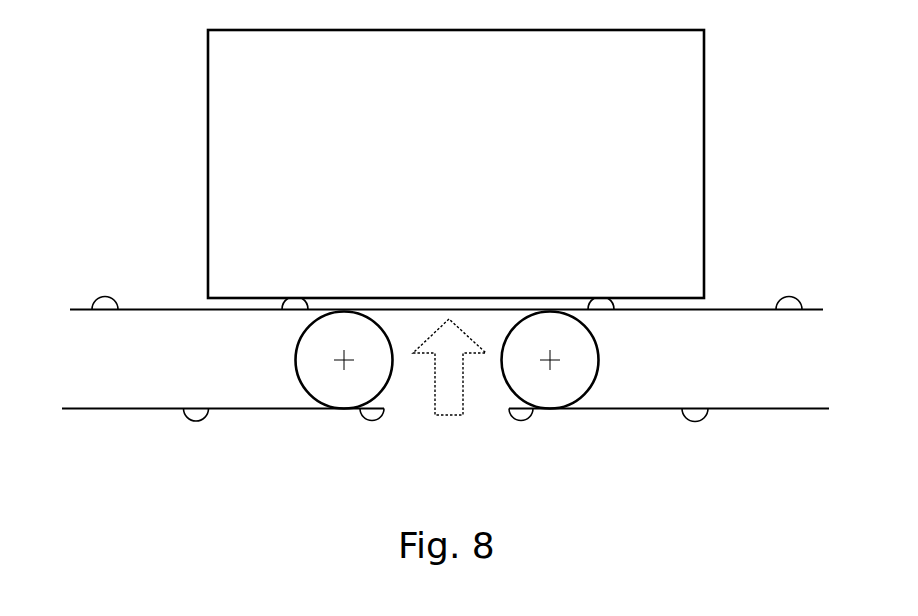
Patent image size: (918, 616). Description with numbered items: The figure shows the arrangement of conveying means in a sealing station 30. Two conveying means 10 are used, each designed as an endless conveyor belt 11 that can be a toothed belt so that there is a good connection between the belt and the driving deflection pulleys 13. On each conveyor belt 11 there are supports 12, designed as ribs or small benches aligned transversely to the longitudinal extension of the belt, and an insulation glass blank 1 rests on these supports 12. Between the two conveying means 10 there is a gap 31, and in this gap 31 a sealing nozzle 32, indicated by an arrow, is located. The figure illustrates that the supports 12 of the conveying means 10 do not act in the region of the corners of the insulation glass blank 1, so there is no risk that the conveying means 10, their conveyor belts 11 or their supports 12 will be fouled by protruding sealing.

The insulation glass blank 1 is at (268, 83).
The sealing station 30 is at (152, 112).
The conveying means 10 is at (118, 353).
The conveyor belt 11 is at (140, 409).
The supports 12 is at (102, 303).
The driving deflection pulleys 13 is at (317, 376).
The gap 31 is at (408, 385).
The sealing nozzle 32 is at (463, 385).